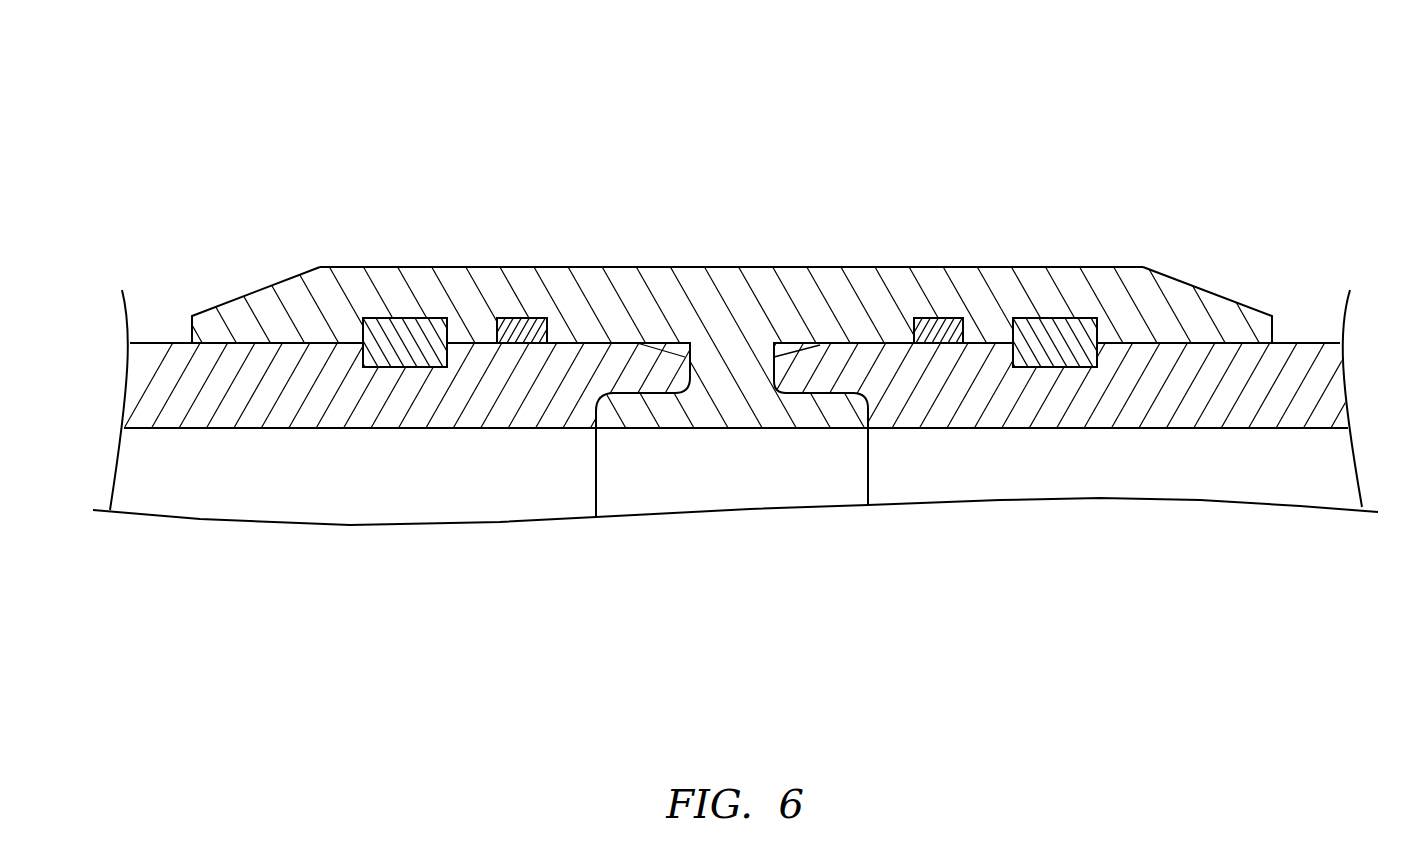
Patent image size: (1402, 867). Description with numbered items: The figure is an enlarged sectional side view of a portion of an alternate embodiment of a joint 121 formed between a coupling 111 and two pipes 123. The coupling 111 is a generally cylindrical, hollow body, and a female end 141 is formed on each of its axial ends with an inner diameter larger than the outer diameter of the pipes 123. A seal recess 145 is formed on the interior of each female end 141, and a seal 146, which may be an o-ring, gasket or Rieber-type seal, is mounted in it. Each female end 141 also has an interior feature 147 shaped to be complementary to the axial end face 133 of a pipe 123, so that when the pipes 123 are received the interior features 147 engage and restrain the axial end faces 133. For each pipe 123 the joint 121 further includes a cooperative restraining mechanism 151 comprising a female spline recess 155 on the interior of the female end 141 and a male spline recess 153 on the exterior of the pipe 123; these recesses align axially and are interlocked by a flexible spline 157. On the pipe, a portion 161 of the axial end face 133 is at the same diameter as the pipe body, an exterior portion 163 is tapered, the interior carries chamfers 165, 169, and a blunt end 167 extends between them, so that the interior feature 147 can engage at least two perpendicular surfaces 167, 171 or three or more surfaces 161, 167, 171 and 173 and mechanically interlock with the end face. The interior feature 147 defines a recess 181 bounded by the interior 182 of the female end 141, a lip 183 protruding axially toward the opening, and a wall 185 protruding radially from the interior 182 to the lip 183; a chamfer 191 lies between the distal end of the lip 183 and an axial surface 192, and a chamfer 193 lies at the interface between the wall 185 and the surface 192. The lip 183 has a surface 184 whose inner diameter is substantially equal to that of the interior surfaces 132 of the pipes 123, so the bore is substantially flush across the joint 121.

The coupling 111 is at (509, 280).
The joint 121 is at (1163, 140).
The pipes 123 is at (147, 388).
The interior surface of the pipes 132 is at (490, 442).
The axial end face 133 is at (708, 378).
The female end 141 is at (247, 315).
The seal recess 145 is at (481, 388).
The seal 146 is at (536, 345).
The interior feature 147 is at (583, 438).
The cooperative restraining mechanism 151 is at (371, 289).
The male spline recess 153 is at (426, 365).
The female spline recess 155 is at (375, 368).
The flexible spline 157 is at (402, 333).
The portion of the axial end face 161 is at (634, 343).
The exterior portion of the axial end face 163 is at (671, 350).
The chamfer 165 is at (629, 402).
The blunt end 167 is at (700, 362).
The chamfer 169 is at (704, 389).
The surface of the axial end face 171 is at (664, 398).
The surface of the axial end face 173 is at (613, 404).
The recess 181 is at (638, 368).
The interior of the female end 182 is at (894, 360).
The lip 183 is at (856, 418).
The surface of the lip 184 is at (783, 442).
The wall 185 is at (807, 366).
The chamfer 191 is at (898, 343).
The axial surface 192 is at (851, 373).
The chamfer 193 is at (790, 378).